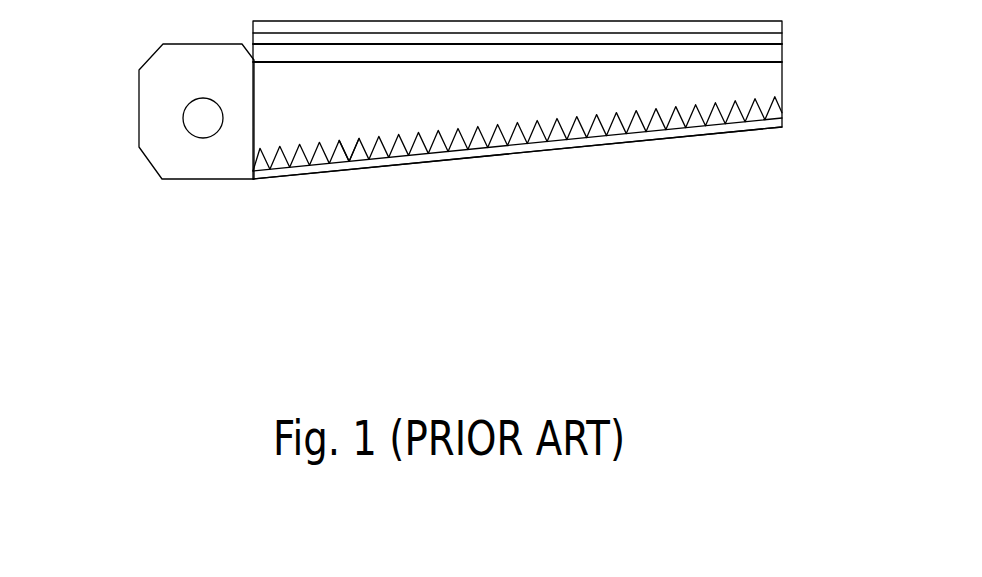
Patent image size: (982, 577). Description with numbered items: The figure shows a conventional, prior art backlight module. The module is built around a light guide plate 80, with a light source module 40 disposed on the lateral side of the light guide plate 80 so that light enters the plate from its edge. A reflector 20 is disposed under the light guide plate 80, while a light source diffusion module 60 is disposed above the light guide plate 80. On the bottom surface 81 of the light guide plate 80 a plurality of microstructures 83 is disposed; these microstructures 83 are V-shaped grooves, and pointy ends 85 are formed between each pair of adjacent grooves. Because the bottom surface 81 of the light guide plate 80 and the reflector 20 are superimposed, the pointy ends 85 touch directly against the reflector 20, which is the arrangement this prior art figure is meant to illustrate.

The reflector 20 is at (682, 133).
The light source module 40 is at (139, 110).
The light source diffusion module 60 is at (782, 25).
The light guide plate 80 is at (763, 78).
The bottom surface 81 is at (349, 154).
The microstructures 83 is at (542, 130).
The pointy ends 85 is at (412, 152).